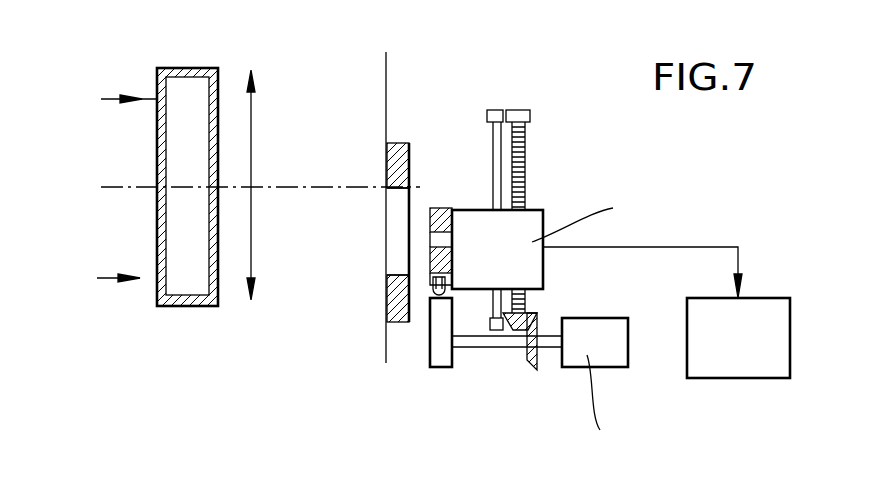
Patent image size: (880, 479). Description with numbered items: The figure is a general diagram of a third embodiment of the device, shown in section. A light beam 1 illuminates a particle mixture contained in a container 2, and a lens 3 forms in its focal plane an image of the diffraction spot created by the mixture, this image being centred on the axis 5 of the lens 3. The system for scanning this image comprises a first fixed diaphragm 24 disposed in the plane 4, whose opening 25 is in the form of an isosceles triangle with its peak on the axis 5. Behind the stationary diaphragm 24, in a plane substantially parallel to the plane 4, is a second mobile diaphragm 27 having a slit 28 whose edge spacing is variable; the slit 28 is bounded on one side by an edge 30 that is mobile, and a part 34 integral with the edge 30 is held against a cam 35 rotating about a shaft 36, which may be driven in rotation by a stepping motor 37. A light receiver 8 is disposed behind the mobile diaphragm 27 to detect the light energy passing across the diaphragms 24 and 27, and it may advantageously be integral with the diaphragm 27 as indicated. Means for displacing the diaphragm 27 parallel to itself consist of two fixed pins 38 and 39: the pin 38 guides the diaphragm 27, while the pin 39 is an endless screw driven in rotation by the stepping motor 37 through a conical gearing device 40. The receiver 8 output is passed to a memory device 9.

The light beam 1 is at (113, 280).
The container 2 is at (185, 307).
The lens 3 is at (253, 100).
The plane 4 is at (386, 352).
The axis 5 is at (310, 190).
The light receiver 8 is at (532, 230).
The memory device 9 is at (752, 312).
The first fixed diaphragm 24 is at (400, 143).
The opening 25 is at (388, 252).
The second mobile diaphragm 27 is at (430, 208).
The slit 28 is at (453, 237).
The edge 30 is at (452, 258).
The part 34 is at (432, 292).
The cam 35 is at (440, 348).
The shaft 36 is at (490, 340).
The stepping motor 37 is at (605, 357).
The fixed pin 38 is at (493, 110).
The endless screw 39 is at (522, 115).
The conical gearing device 40 is at (527, 357).